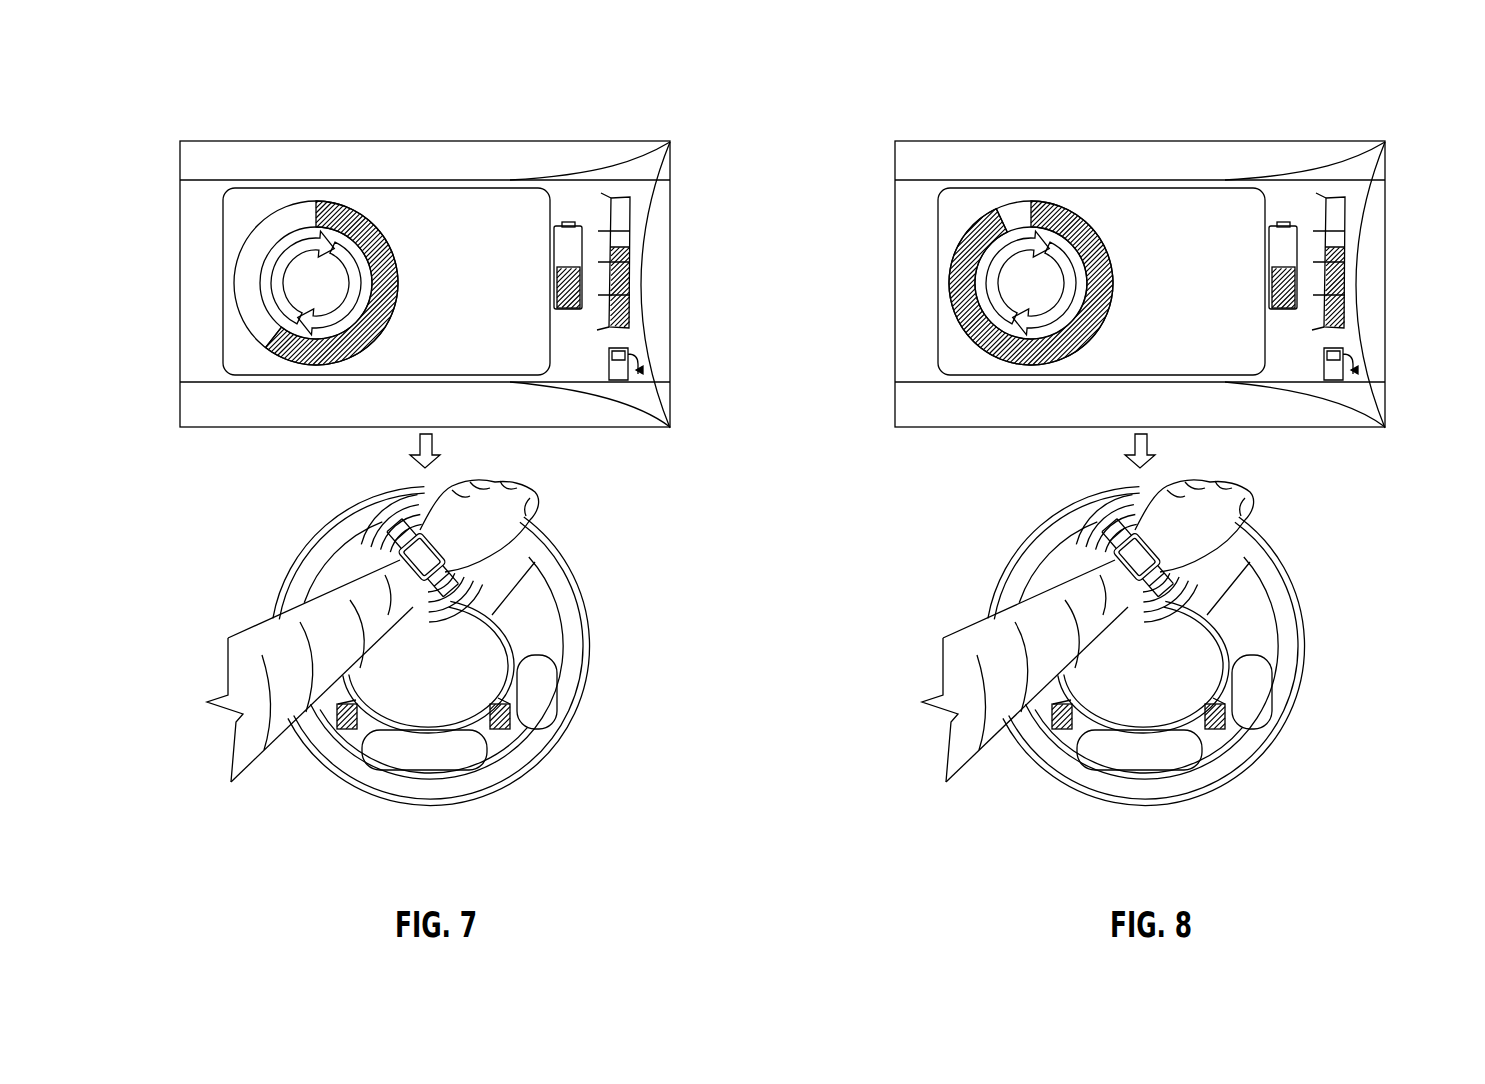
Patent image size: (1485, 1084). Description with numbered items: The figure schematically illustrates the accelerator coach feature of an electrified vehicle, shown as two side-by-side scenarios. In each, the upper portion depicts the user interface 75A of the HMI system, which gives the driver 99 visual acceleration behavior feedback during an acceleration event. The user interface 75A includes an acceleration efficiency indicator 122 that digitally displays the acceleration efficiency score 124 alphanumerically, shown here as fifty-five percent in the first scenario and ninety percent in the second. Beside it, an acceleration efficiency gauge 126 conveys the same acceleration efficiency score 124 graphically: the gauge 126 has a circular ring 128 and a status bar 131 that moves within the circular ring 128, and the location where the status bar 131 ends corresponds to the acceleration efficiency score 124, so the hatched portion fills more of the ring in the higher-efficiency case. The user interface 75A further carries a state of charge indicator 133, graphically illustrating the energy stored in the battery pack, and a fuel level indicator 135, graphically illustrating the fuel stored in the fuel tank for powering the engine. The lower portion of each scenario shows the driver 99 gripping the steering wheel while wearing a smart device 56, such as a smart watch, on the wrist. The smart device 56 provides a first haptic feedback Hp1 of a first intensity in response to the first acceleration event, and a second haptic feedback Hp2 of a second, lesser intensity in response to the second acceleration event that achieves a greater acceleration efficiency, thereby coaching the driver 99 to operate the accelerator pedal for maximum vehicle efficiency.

In FIG. 7, the user interface 75A is at (255, 133).
In FIG. 8, the user interface 75A is at (1140, 243).
In FIG. 7, the acceleration efficiency indicator 122 is at (452, 200).
In FIG. 8, the acceleration efficiency indicator 122 is at (1101, 235).
In FIG. 7, the acceleration efficiency score 124 is at (478, 318).
In FIG. 8, the acceleration efficiency score 124 is at (1183, 321).
In FIG. 7, the acceleration efficiency gauge 126 is at (226, 292).
In FIG. 8, the acceleration efficiency gauge 126 is at (973, 283).
In FIG. 7, the circular ring 128 is at (240, 250).
In FIG. 8, the circular ring 128 is at (975, 256).
In FIG. 7, the status bar 131 is at (283, 352).
In FIG. 8, the status bar 131 is at (974, 317).
In FIG. 7, the state of charge indicator 133 is at (566, 318).
In FIG. 8, the state of charge indicator 133 is at (1301, 347).
In FIG. 7, the fuel level indicator 135 is at (628, 275).
In FIG. 8, the fuel level indicator 135 is at (1373, 281).
In FIG. 7, the smart device 56 is at (447, 550).
In FIG. 8, the smart device 56 is at (1155, 556).
In FIG. 7, the driver 99 is at (257, 745).
In FIG. 8, the driver 99 is at (1088, 650).
In FIG. 7, the first haptic feedback Hp1 is at (378, 508).
In FIG. 8, the second haptic feedback Hp2 is at (1096, 549).